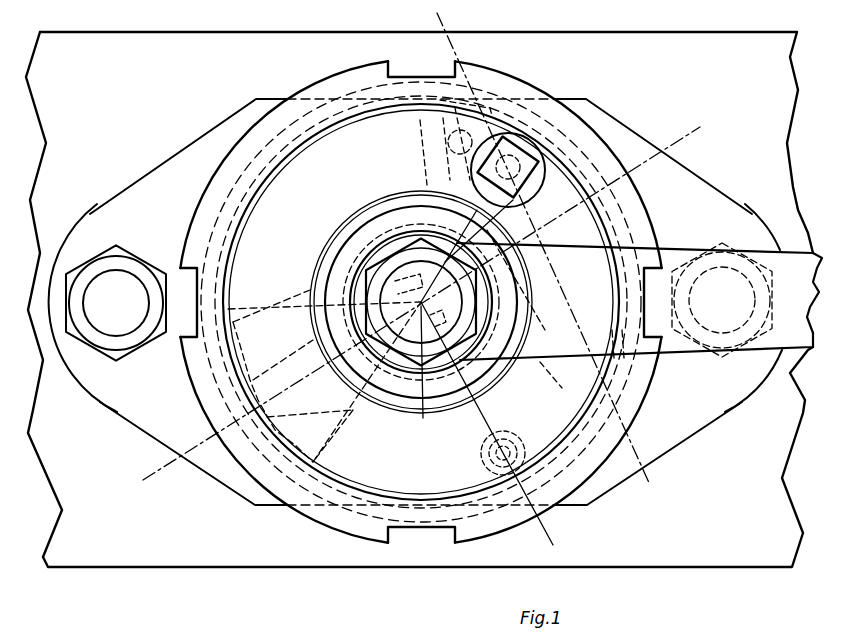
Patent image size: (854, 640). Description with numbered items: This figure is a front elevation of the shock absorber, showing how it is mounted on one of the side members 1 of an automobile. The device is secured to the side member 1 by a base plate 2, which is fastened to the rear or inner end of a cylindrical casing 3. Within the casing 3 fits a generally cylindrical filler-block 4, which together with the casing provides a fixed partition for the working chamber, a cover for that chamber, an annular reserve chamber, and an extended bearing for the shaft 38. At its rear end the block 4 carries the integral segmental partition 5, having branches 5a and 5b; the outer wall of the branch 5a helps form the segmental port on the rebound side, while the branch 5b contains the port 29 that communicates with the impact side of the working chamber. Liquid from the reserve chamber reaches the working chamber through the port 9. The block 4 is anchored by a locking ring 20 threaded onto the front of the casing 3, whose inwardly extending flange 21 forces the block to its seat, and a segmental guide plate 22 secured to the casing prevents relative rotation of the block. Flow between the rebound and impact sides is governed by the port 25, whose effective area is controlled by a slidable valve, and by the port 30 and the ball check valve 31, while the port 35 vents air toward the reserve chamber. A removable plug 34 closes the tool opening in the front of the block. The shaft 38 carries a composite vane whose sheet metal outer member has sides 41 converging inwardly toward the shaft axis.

The side member of an automobile 1 is at (730, 516).
The base plate 2 is at (141, 184).
The cylindrical casing 3 is at (138, 458).
The filler-block 4 is at (421, 302).
The segmental partition 5 is at (443, 60).
The branch of the partition 5a is at (416, 131).
The branch of the partition 5b is at (552, 380).
The port 9 is at (508, 440).
The locking ring 20 is at (207, 188).
The inwardly extending flange 21 is at (226, 266).
The segmental guide plate 22 is at (640, 212).
The port 25 is at (543, 147).
The port 29 is at (537, 341).
The port 30 is at (446, 185).
The ball check valve 31 is at (446, 143).
The removable plug 34 is at (539, 163).
The port 35 is at (528, 213).
The shaft 38 is at (425, 408).
The sides of the outer vane member 41 is at (284, 300).